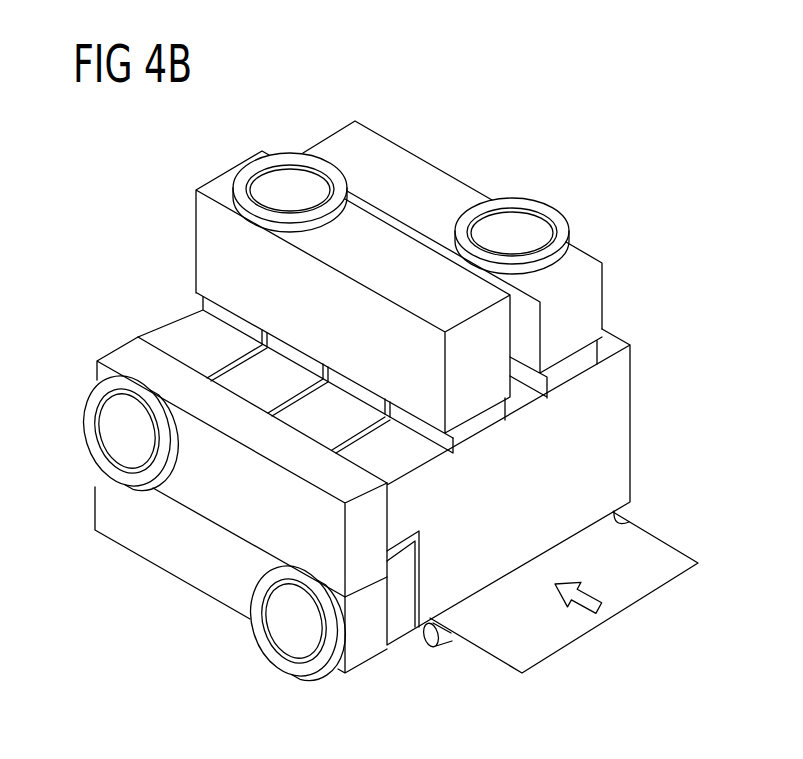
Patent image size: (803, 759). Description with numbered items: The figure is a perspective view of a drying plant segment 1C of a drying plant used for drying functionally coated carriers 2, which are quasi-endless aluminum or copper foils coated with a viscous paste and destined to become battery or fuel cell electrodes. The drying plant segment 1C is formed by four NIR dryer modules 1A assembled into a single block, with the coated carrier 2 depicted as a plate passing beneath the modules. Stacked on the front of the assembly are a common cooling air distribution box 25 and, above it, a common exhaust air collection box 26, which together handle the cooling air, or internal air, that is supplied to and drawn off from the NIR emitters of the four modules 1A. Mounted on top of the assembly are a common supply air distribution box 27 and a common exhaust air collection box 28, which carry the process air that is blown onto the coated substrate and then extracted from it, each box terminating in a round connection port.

The drying plant segment 1C is at (613, 186).
The NIR dryer module 1A is at (620, 433).
The functionally coated carrier 2 is at (645, 547).
The cooling air distribution box 25 is at (220, 588).
The exhaust air collection box 26 is at (123, 358).
The supply air distribution box 27 is at (207, 240).
The exhaust air collection box 28 is at (425, 173).